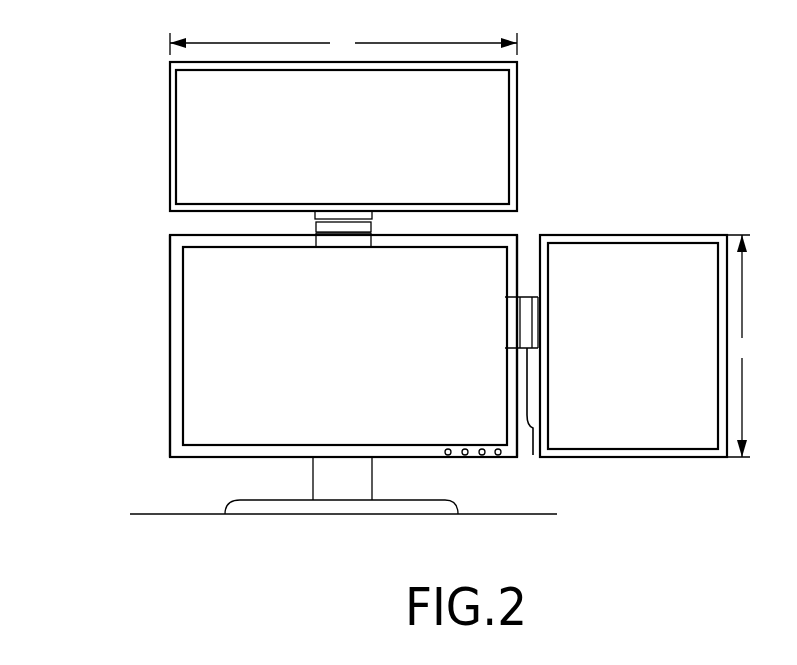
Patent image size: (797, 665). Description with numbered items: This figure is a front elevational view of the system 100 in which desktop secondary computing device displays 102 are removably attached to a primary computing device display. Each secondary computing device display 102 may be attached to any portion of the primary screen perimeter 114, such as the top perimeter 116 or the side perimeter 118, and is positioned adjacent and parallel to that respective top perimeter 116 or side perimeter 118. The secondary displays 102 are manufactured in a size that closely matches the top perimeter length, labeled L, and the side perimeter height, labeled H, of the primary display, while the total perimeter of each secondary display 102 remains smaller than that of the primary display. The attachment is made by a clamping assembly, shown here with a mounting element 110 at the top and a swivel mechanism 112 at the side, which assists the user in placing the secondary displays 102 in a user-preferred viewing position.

The system 100 is at (112, 77).
The secondary computing device display 102 is at (552, 122).
The mounting bracket 110 is at (373, 227).
The swivel mechanism 112 is at (533, 455).
The primary screen perimeter 114 is at (175, 313).
The top perimeter 116 is at (178, 234).
The side perimeter 118 is at (170, 421).